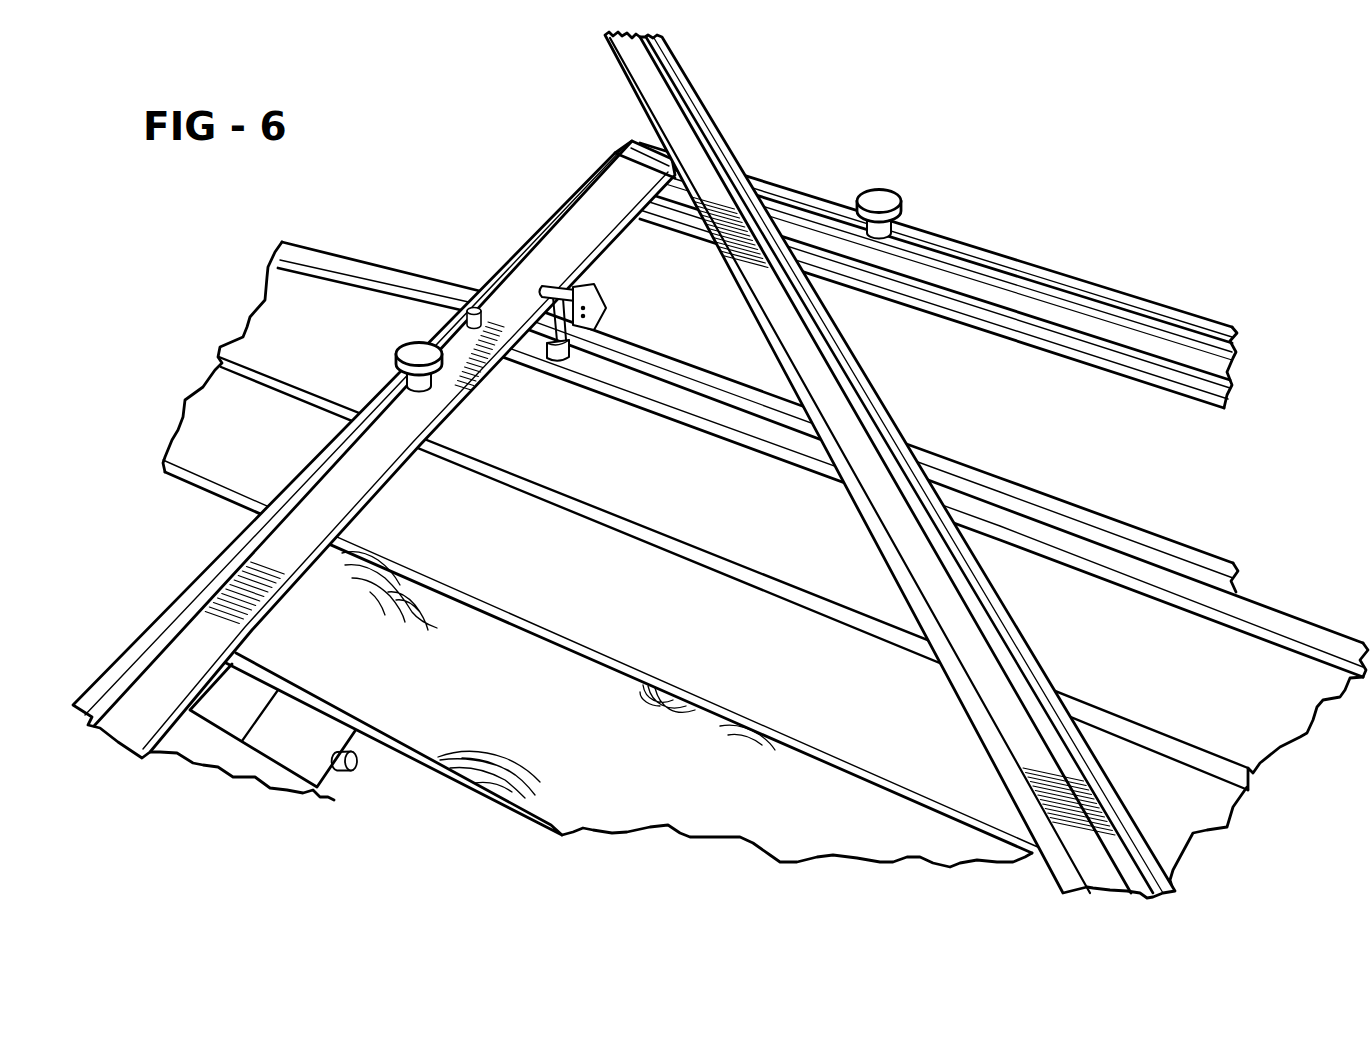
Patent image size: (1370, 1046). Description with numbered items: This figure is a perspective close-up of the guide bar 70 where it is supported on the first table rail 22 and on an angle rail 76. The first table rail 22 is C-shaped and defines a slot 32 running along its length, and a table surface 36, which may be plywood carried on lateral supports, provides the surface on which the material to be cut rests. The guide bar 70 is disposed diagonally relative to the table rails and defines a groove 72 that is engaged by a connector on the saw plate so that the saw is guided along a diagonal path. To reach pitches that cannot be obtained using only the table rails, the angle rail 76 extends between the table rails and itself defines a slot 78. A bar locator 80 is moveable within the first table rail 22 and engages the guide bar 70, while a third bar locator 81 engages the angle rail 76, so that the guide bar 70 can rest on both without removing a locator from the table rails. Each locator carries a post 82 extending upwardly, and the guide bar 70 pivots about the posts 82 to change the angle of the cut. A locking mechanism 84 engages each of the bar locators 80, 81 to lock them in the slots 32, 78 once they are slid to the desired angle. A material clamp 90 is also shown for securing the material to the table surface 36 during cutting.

The first table rail 22 is at (938, 263).
The slot 32 is at (962, 245).
The table surface 36 is at (521, 716).
The guide bar 70 is at (874, 465).
The groove 72 is at (700, 142).
The angle rail 76 is at (186, 668).
The slot 78 is at (374, 449).
The bar locator 80 is at (808, 197).
The third bar locator 81 is at (455, 340).
The post 82 is at (473, 309).
The locking mechanism 84 is at (417, 347).
The material clamp 90 is at (592, 284).